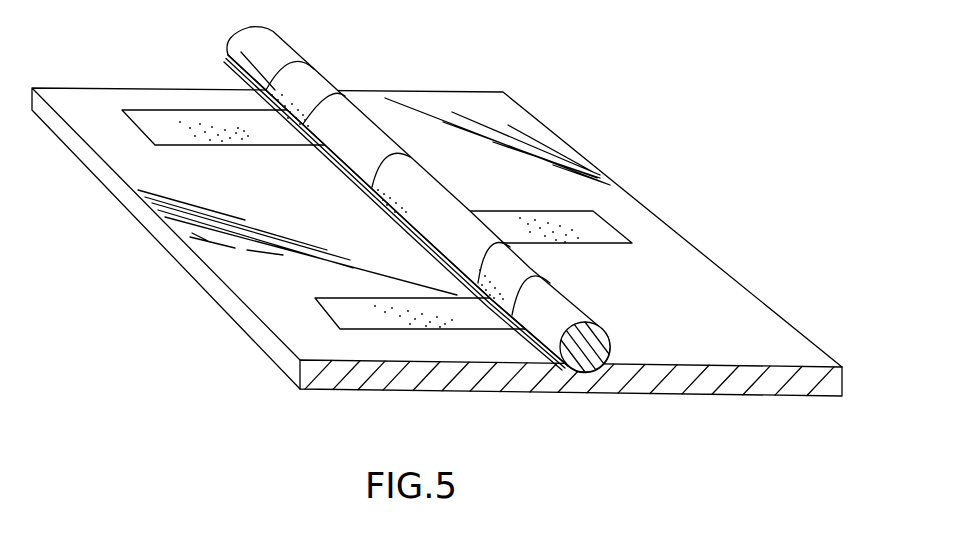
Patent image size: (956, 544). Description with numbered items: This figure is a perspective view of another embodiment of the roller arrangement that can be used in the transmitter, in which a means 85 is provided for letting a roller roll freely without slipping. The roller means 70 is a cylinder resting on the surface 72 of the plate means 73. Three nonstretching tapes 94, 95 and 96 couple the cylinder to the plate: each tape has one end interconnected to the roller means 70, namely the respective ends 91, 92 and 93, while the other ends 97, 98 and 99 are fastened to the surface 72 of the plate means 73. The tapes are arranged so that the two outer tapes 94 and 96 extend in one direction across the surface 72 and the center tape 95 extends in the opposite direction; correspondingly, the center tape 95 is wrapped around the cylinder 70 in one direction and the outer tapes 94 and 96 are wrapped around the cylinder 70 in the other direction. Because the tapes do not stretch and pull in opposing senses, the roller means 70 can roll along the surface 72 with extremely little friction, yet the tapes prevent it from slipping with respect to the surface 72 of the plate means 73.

The roller means 70 is at (418, 200).
The surface 72 is at (707, 288).
The plate means 73 is at (353, 376).
The means 85 is at (579, 71).
The end 91 is at (247, 80).
The end 92 is at (413, 177).
The end 93 is at (462, 272).
The nonstretching tape 94 is at (263, 133).
The nonstretching tape 95 is at (563, 230).
The nonstretching tape 96 is at (455, 313).
The other end 97 is at (143, 125).
The other end 98 is at (603, 227).
The other end 99 is at (337, 312).